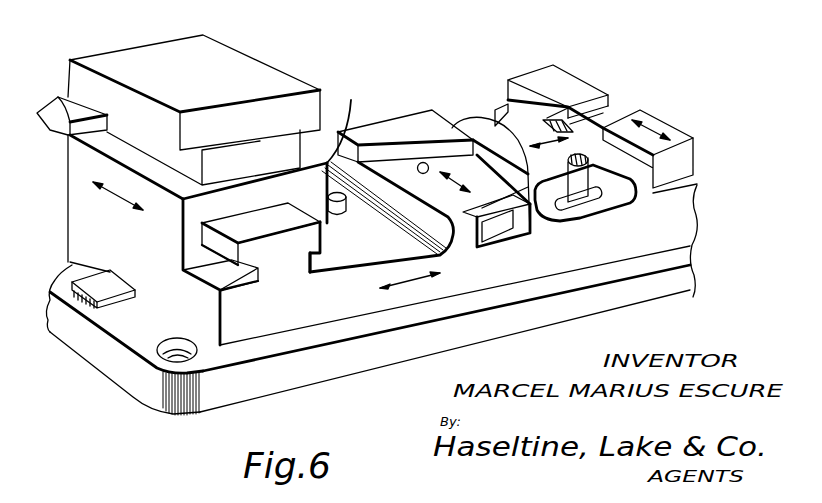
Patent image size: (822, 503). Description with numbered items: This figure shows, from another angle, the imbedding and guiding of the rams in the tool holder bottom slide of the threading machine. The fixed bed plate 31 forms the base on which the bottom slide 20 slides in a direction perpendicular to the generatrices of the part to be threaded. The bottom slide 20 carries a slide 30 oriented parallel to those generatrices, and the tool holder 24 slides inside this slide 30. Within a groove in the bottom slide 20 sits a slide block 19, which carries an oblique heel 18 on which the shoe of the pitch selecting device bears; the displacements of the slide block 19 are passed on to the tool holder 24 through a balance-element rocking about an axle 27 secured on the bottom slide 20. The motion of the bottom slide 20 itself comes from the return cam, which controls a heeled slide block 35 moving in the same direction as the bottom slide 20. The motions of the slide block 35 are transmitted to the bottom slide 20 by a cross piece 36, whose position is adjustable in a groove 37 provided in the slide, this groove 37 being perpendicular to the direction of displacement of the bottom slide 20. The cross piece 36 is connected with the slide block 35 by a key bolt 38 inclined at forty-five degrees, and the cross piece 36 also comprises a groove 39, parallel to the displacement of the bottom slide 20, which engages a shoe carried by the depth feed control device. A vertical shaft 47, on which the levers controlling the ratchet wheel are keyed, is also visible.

The oblique heel 18 is at (388, 150).
The slide block 19 is at (500, 217).
The bottom slide 20 is at (317, 307).
The tool holder 24 is at (153, 55).
The axle 27 is at (335, 193).
The slide 30 is at (273, 250).
The fixed bed plate 31 is at (126, 369).
The heeled slide block 35 is at (483, 133).
The cross piece 36 is at (567, 88).
The groove 37 is at (665, 193).
The key bolt 38 is at (557, 120).
The groove 39 is at (607, 102).
The vertical shaft 47 is at (580, 190).